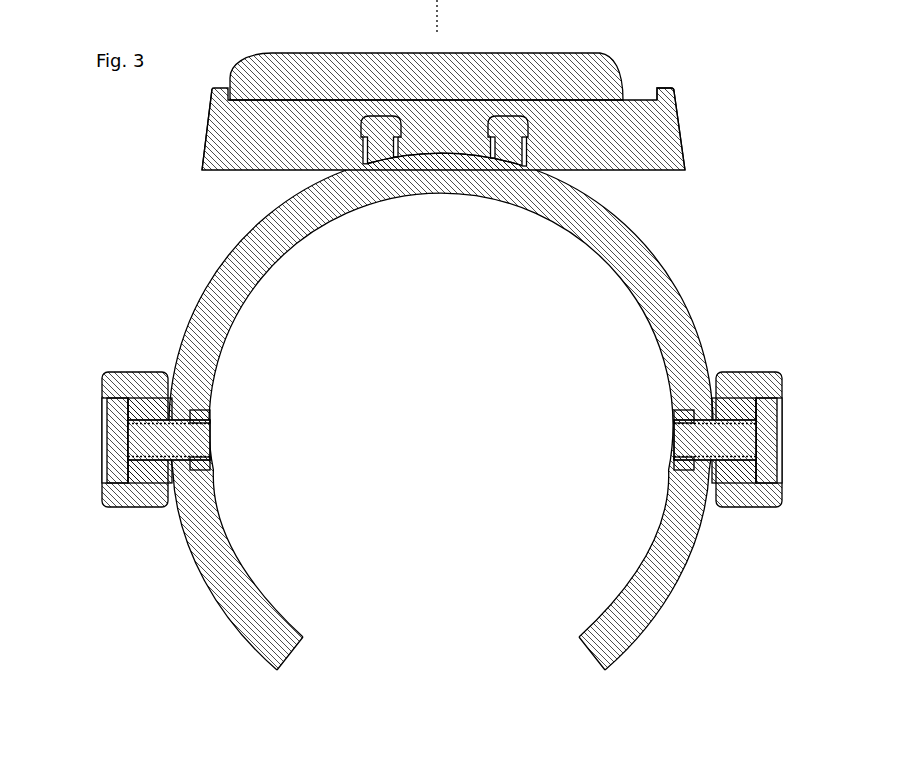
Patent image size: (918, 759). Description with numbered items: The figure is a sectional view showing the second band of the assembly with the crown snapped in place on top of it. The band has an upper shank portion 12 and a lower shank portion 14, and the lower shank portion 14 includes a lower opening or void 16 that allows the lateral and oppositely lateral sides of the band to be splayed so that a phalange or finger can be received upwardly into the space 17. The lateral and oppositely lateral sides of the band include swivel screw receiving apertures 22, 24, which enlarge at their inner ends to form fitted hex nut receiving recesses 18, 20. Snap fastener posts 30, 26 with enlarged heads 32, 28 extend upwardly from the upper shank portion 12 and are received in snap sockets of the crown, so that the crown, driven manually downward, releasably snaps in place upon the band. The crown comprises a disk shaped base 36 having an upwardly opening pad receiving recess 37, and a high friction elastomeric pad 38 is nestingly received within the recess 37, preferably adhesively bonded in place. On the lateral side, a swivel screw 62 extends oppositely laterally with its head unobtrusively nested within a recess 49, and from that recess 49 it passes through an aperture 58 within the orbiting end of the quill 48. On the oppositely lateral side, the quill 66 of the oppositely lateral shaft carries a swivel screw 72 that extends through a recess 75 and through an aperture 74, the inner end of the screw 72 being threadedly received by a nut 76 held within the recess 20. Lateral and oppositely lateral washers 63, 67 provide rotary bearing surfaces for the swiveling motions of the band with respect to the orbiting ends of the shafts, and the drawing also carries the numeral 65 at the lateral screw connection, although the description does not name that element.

The upper shank portion 12 is at (470, 176).
The lower shank portion 14 is at (250, 615).
The lower opening or void 16 is at (448, 655).
The space 17 is at (421, 382).
The hex nut receiving recess 18 is at (207, 390).
The hex nut receiving recess 20 is at (690, 418).
The swivel screw receiving aperture 22 is at (215, 490).
The swivel screw receiving aperture 24 is at (690, 413).
The snap fastener post 26 is at (513, 153).
The enlarged head 28 is at (513, 128).
The snap fastener post 30 is at (375, 148).
The enlarged head 32 is at (370, 125).
The base 36 is at (217, 157).
The pad receiving recess 37 is at (623, 100).
The high friction elastomeric pad 38 is at (593, 73).
The quill 48 is at (160, 505).
The recess 49 is at (103, 383).
The aperture 58 is at (140, 505).
The swivel screw 62 is at (183, 437).
The washer 63 is at (167, 400).
The left threads 65 is at (195, 417).
The quill 66 is at (742, 387).
The washer 67 is at (693, 470).
The swivel screw 72 is at (762, 440).
The aperture 74 is at (742, 485).
The recess 75 is at (783, 382).
The nut 76 is at (680, 428).